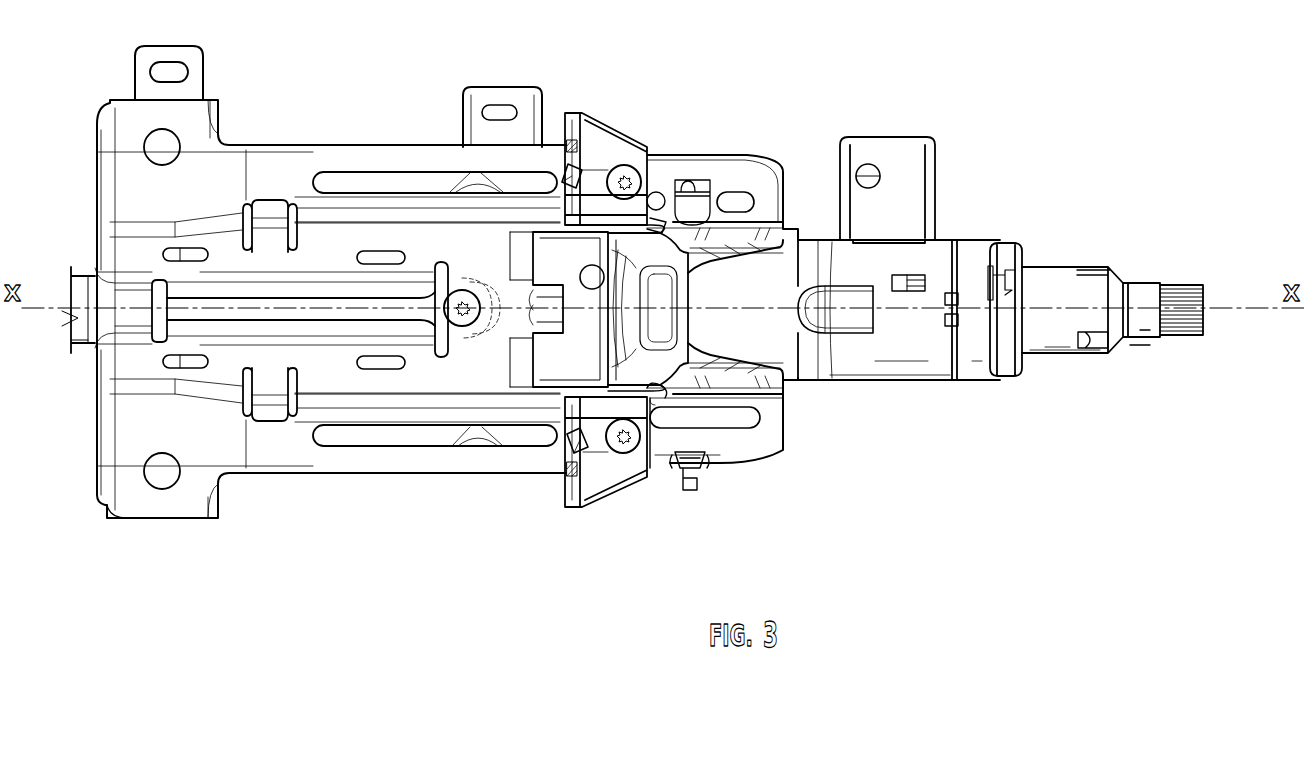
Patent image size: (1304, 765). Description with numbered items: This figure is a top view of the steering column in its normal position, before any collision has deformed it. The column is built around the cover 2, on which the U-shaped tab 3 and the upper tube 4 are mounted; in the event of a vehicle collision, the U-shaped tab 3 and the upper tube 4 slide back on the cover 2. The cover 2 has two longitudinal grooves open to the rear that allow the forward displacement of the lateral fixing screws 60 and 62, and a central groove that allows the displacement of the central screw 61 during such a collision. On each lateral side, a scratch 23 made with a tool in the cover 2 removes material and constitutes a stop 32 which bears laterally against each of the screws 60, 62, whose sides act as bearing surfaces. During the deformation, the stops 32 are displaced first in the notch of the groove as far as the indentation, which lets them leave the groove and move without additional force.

The cover 2 is at (298, 167).
The scratch 23 is at (413, 185).
The U-shaped tab 3 is at (748, 185).
The upper tube 4 is at (1062, 280).
The stop 32 is at (565, 445).
The lateral fixing screw 60 is at (630, 170).
The central screw 61 is at (460, 324).
The lateral fixing screw 62 is at (620, 453).